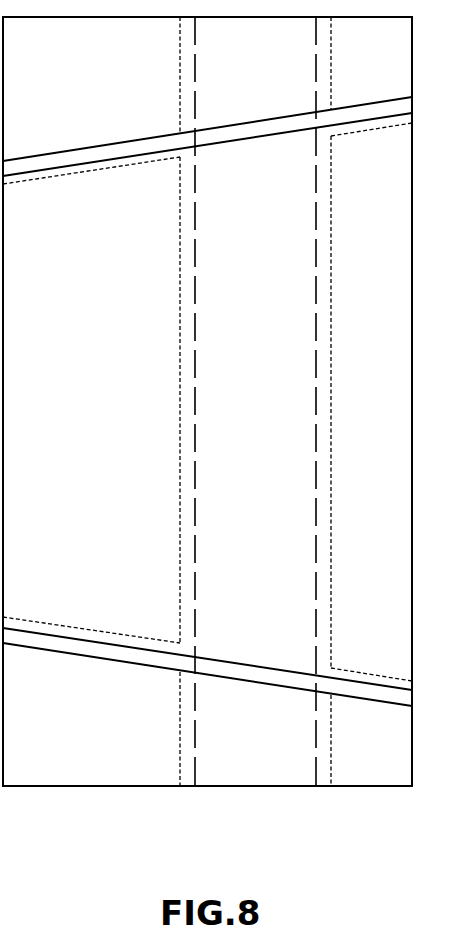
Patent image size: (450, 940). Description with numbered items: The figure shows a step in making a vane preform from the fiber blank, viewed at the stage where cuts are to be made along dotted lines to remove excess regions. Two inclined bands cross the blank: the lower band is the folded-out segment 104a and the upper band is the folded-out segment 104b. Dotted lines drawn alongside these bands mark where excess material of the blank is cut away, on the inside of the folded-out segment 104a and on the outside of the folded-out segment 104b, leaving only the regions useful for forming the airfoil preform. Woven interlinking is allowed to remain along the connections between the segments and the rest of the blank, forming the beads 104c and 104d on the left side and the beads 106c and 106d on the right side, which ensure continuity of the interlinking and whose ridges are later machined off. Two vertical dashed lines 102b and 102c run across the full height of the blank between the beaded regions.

The folded-out segment 104a is at (63, 645).
The folded-out segment 104b is at (67, 158).
The bead 104c is at (110, 638).
The bead 104d is at (113, 164).
The bead 106c is at (373, 678).
The bead 106d is at (372, 125).
The fold line 102b is at (196, 475).
The fold line 102c is at (316, 399).